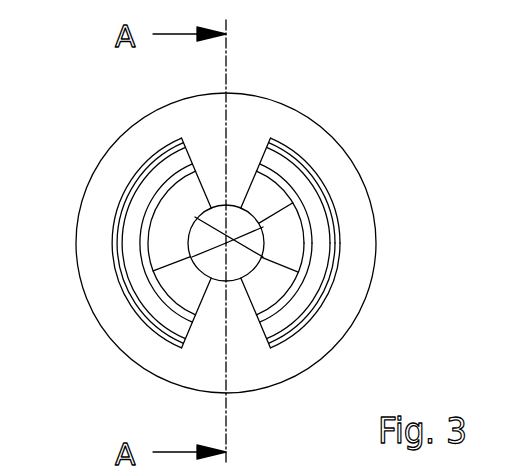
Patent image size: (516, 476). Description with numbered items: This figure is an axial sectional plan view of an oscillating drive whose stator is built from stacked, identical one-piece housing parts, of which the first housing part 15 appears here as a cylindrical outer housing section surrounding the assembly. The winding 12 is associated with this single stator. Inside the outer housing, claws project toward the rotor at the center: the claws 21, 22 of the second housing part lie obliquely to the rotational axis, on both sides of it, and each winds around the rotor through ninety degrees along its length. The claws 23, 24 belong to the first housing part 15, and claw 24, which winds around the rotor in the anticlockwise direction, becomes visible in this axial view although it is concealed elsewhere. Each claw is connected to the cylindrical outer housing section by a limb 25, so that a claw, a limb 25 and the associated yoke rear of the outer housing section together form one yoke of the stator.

The winding 12 is at (323, 300).
The first housing part 15 is at (376, 272).
The claw 21 is at (140, 312).
The claw 22 is at (290, 201).
The claw 23 is at (277, 246).
The claw 24 is at (174, 234).
The limb 25 is at (240, 176).